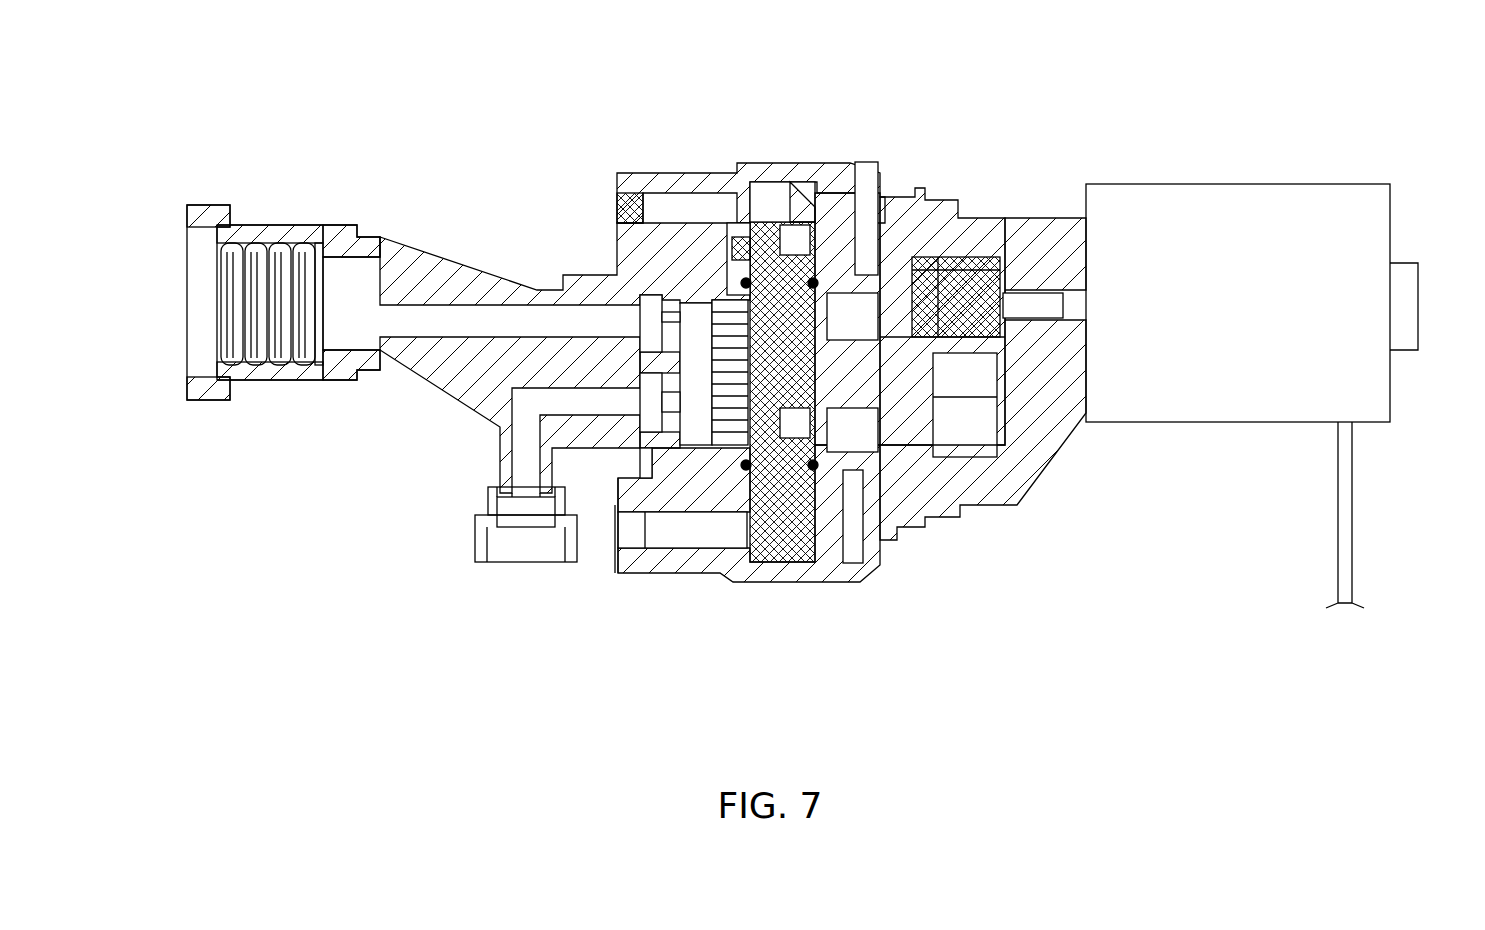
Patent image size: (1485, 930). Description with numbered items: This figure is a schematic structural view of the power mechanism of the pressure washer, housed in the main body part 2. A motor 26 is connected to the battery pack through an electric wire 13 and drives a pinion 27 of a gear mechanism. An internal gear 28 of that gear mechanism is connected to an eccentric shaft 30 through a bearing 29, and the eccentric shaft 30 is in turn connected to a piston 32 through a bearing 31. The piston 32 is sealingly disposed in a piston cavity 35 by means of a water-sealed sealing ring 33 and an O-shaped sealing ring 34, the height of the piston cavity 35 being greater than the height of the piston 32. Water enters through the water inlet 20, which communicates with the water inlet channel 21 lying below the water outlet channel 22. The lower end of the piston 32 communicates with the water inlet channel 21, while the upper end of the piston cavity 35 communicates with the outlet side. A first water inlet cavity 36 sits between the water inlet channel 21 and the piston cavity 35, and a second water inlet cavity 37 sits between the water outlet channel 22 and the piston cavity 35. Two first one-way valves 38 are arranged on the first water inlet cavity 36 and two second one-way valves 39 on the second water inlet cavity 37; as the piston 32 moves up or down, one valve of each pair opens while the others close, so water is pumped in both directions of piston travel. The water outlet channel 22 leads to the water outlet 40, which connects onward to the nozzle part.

The main body part 2 is at (1142, 163).
The electric wire 13 is at (1342, 478).
The water inlet 20 is at (522, 532).
The water inlet channel 21 is at (600, 400).
The water outlet channel 22 is at (440, 322).
The motor 26 is at (1235, 222).
The pinion 27 is at (985, 262).
The internal gear 28 is at (925, 232).
The bearing 29 is at (915, 200).
The eccentric shaft 30 is at (857, 377).
The bearing 31 is at (790, 340).
The piston 32 is at (750, 205).
The water-sealed sealing ring 33 is at (733, 240).
The O-shaped sealing ring 34 is at (741, 279).
The piston cavity 35 is at (795, 215).
The first water inlet cavity 36 is at (695, 533).
The second water inlet cavity 37 is at (655, 212).
The first one-way valve 38 is at (633, 537).
The second one-way valve 39 is at (655, 210).
The water outlet 40 is at (200, 290).